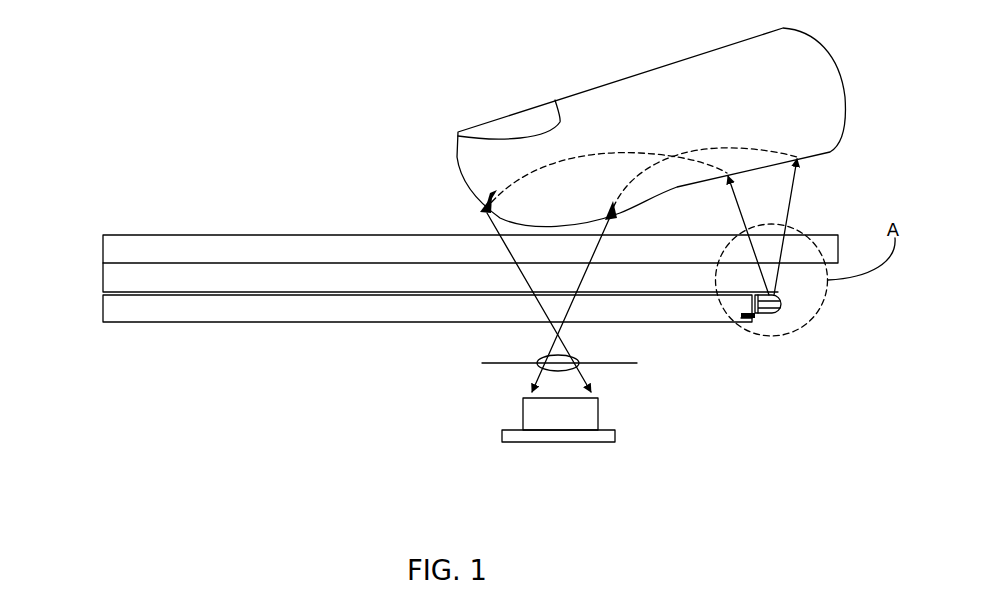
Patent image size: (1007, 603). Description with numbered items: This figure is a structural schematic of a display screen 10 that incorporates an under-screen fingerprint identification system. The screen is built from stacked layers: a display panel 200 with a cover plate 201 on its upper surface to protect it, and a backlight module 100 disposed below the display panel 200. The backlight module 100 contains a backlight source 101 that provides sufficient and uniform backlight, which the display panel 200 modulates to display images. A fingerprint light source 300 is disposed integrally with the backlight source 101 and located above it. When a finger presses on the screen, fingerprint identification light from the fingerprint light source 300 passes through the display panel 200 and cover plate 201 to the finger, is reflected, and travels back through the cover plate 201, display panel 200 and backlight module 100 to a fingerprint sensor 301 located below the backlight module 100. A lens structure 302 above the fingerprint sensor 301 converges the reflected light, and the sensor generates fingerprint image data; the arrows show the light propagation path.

The display screen 10 is at (63, 59).
The backlight module 100 is at (103, 308).
The backlight source 101 is at (780, 308).
The display panel 200 is at (103, 275).
The cover plate 201 is at (101, 252).
The fingerprint light source 300 is at (768, 302).
The fingerprint sensor 301 is at (528, 413).
The lens structure 302 is at (555, 362).